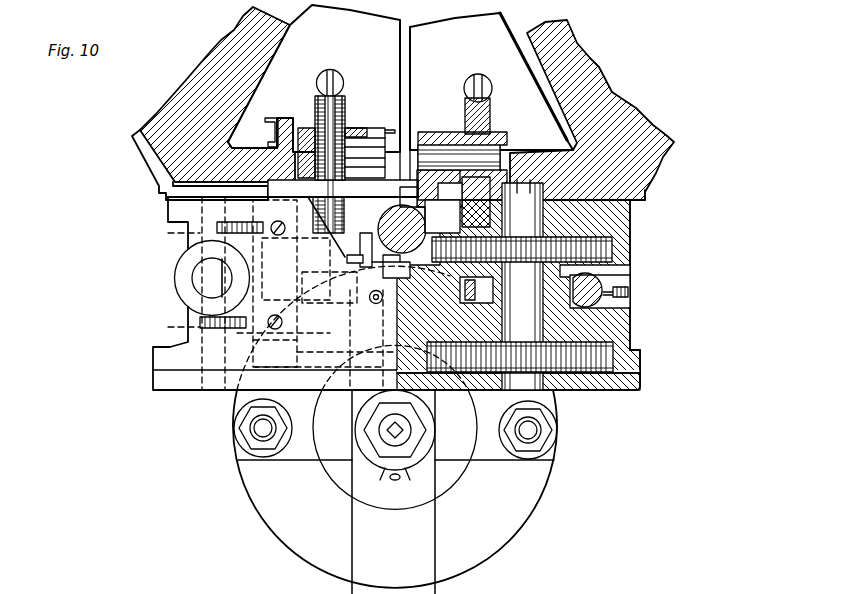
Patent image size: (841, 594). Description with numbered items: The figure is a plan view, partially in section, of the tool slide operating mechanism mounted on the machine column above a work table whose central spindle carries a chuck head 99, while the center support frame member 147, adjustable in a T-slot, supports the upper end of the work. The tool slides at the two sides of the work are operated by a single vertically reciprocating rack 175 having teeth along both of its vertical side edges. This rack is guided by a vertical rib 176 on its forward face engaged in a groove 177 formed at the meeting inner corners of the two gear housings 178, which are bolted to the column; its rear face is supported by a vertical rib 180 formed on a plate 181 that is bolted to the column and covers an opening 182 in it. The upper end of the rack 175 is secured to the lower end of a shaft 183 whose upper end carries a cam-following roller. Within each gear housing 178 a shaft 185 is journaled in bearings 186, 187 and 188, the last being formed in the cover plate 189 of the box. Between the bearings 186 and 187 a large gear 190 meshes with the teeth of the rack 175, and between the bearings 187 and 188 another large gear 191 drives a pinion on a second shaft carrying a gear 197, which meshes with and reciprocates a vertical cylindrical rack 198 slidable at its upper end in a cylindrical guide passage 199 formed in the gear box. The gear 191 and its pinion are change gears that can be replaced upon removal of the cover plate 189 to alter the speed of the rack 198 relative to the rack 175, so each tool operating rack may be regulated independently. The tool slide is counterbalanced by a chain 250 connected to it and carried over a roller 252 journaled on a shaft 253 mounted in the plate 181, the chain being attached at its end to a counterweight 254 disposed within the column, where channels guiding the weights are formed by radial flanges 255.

The counterweight 254 is at (366, 45).
The radial flanges 255 is at (577, 60).
The chain 250 is at (343, 80).
The roller 252 is at (344, 115).
The plate 181 is at (278, 182).
The vertical rib 180 is at (392, 117).
The shaft 253 is at (433, 163).
The opening 182 is at (515, 168).
The bearing 186 is at (628, 218).
The large gear 190 is at (617, 247).
The bearing 187 is at (628, 278).
The cylindrical guide passage 199 is at (668, 284).
The vertical cylindrical rack 198 is at (630, 292).
The gear 197 is at (628, 308).
The gear housing 178 is at (178, 308).
The large gear 191 is at (627, 351).
The cover plate 189 is at (622, 395).
The shaft 185 is at (612, 398).
The bearing 188 is at (555, 396).
The chuck head 99 is at (537, 495).
The center support frame member 147 is at (437, 534).
The shaft 183 is at (382, 222).
The vertical rib 176 is at (398, 262).
The vertically reciprocating rack 175 is at (352, 264).
The groove 177 is at (387, 268).